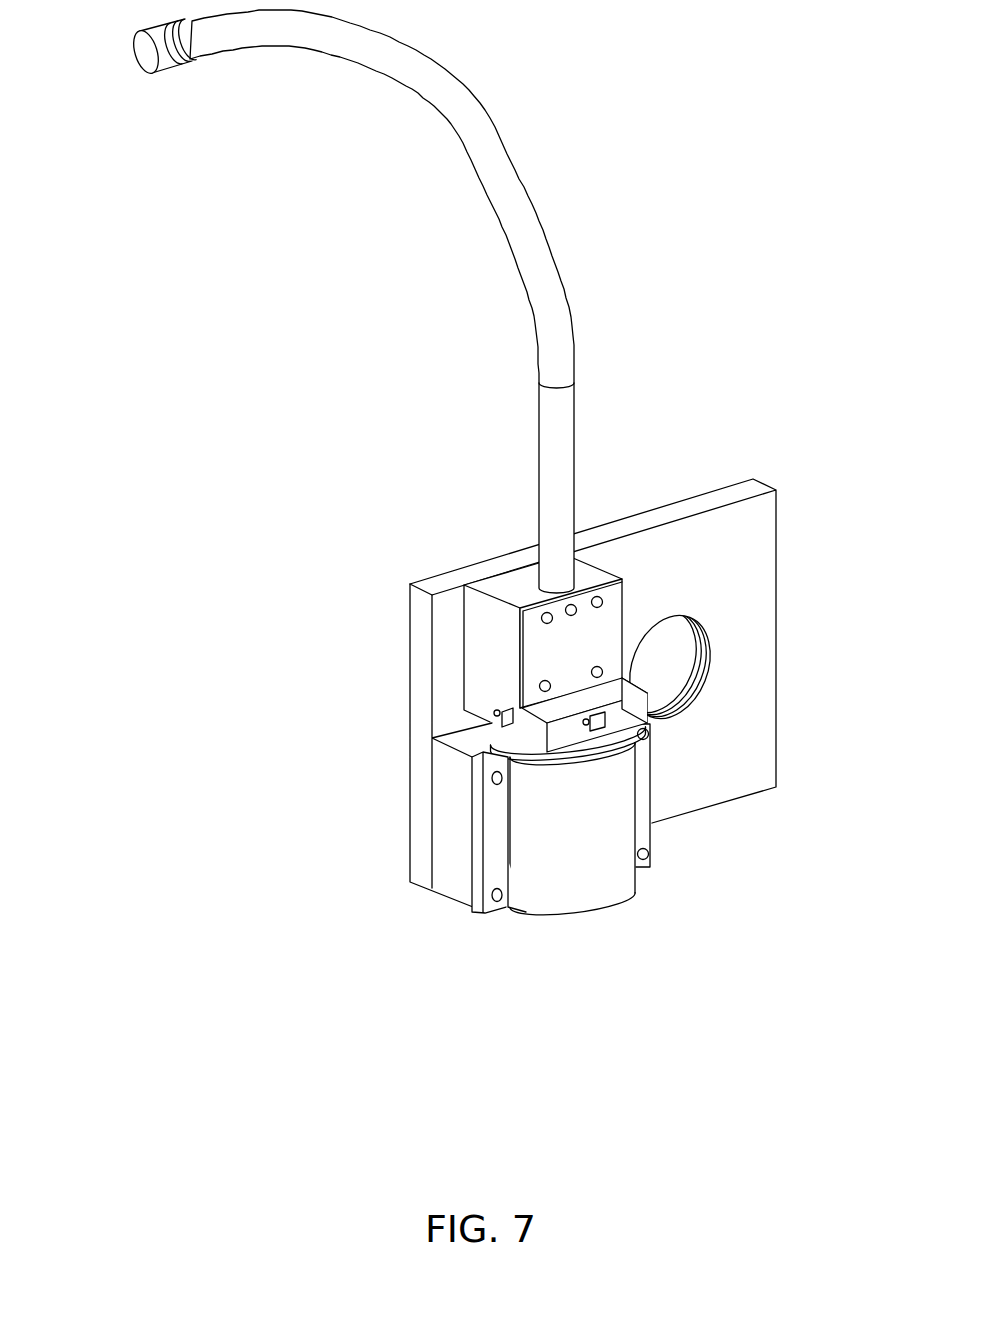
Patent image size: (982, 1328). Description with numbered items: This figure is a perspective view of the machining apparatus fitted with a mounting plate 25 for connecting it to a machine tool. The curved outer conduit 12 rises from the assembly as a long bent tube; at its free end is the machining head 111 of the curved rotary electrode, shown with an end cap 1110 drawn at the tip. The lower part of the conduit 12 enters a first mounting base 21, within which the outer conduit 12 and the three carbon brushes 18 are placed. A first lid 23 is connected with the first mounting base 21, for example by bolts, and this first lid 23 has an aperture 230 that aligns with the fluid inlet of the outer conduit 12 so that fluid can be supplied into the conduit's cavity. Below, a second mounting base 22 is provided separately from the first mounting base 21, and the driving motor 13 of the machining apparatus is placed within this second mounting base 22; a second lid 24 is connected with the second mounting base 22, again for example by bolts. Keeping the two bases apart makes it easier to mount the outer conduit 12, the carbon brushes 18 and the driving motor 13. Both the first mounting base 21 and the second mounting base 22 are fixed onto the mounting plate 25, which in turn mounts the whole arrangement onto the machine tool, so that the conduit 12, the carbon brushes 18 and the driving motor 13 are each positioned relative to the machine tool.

The end cap 1110 is at (146, 60).
The machining head 111 is at (167, 58).
The curved outer conduit 12 is at (524, 191).
The aperture 230 is at (573, 607).
The mounting plate 25 is at (743, 622).
The first mounting base 21 is at (487, 636).
The first lid 23 is at (549, 664).
The carbon brushes 18 is at (500, 717).
The driving motor 13 is at (508, 740).
The second mounting base 22 is at (447, 827).
The second lid 24 is at (493, 857).